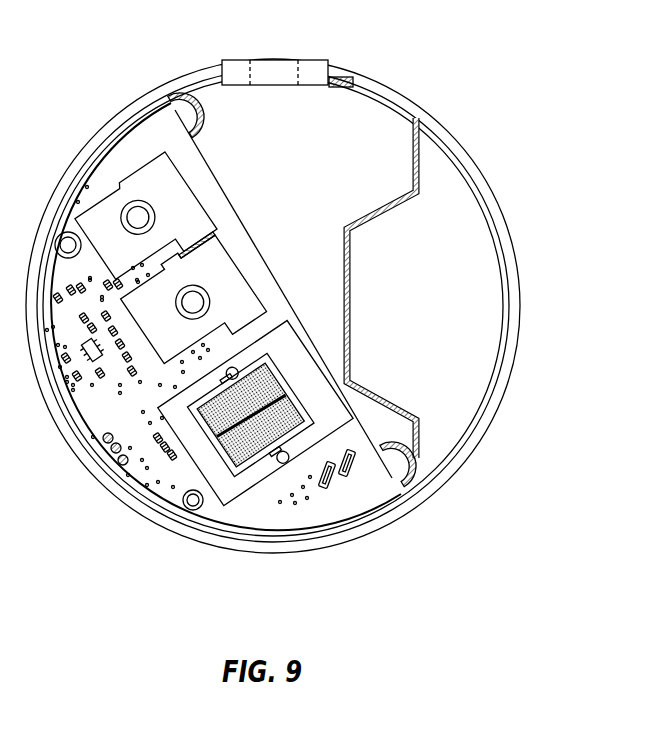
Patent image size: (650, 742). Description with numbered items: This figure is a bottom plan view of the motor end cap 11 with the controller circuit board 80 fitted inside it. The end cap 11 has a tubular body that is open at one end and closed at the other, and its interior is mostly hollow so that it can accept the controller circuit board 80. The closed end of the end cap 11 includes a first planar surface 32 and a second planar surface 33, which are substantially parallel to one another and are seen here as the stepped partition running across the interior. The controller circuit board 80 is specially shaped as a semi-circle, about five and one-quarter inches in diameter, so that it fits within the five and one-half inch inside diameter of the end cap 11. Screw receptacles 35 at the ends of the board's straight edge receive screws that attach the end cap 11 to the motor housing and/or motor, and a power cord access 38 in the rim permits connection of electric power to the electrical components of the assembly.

The end cap 11 is at (462, 140).
The first planar surface 32 is at (351, 121).
The second planar surface 33 is at (472, 301).
The screw receptacle 35 is at (185, 105).
The power cord access 38 is at (272, 73).
The controller circuit board 80 is at (340, 505).